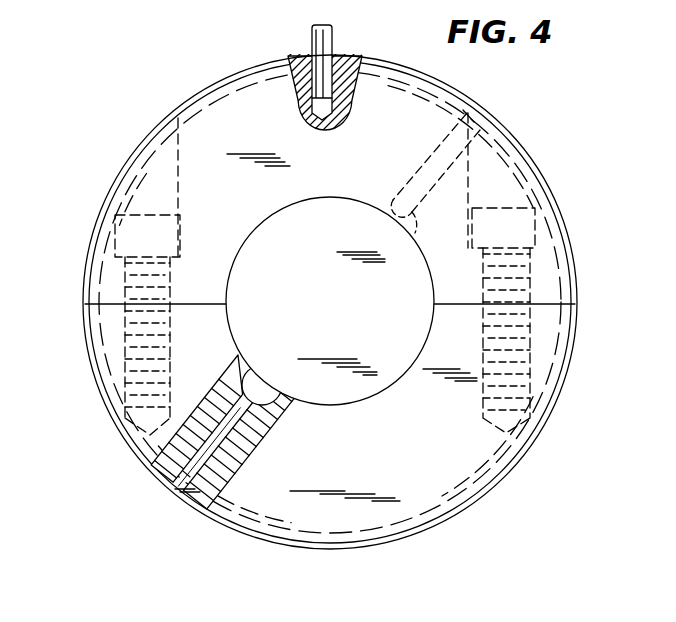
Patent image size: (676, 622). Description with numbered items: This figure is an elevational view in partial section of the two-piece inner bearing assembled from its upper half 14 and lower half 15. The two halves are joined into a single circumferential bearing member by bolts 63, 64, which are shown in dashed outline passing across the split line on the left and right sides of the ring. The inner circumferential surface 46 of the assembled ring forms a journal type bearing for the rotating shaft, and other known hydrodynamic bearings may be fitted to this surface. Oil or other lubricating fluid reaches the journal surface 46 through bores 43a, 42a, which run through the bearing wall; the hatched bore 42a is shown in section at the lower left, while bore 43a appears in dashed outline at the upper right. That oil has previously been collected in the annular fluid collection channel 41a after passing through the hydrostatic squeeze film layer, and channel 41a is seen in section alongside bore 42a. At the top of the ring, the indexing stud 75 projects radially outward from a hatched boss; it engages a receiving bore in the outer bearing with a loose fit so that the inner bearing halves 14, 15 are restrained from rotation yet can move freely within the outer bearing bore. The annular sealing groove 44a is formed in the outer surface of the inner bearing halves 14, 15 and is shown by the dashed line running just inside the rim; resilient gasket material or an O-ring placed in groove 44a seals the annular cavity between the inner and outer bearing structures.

The upper half of inner bearing 14 is at (466, 508).
The lower half of inner bearing 15 is at (240, 70).
The annular fluid collection channel 41a is at (190, 500).
The bore 42a is at (172, 484).
The bore 43a is at (473, 134).
The annular sealing groove 44a is at (497, 458).
The inner circumferential surface 46 is at (433, 331).
The bolt 63 is at (523, 283).
The bolt 64 is at (130, 292).
The indexing stud 75 is at (322, 42).